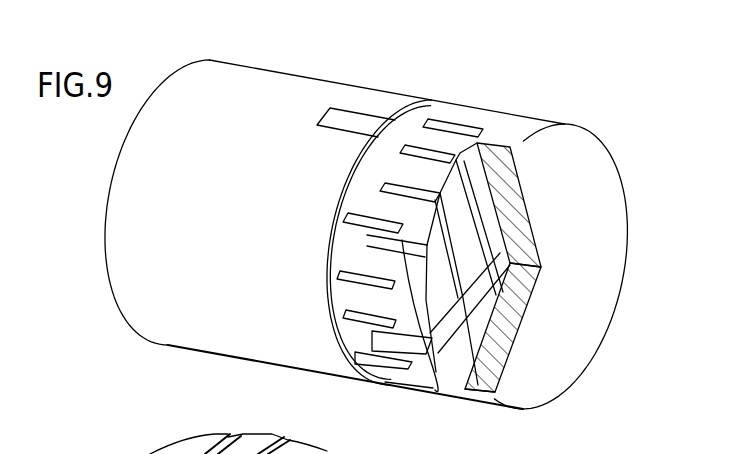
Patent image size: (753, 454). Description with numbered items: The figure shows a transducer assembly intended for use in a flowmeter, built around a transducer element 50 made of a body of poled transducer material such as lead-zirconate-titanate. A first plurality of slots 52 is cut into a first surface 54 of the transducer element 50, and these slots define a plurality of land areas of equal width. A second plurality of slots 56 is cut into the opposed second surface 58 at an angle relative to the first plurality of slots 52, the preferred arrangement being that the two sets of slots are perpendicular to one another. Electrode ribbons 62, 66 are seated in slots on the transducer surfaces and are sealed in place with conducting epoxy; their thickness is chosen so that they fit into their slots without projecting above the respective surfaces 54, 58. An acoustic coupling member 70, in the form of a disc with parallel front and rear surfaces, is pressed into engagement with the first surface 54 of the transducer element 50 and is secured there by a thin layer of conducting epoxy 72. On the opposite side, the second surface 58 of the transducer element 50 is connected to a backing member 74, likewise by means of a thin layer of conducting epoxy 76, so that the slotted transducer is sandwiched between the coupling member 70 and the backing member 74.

The transducer element 50 is at (447, 98).
The first plurality of slots 52 is at (418, 157).
The first surface 54 is at (440, 362).
The second plurality of slots 56 is at (353, 318).
The second surface 58 is at (335, 258).
The electrode ribbon 62 is at (383, 337).
The electrode ribbon 66 is at (343, 118).
The acoustic coupling member 70 is at (605, 173).
The thin layer of conducting epoxy 72 is at (462, 375).
The backing member 74 is at (280, 82).
The thin layer of conducting epoxy 76 is at (362, 150).